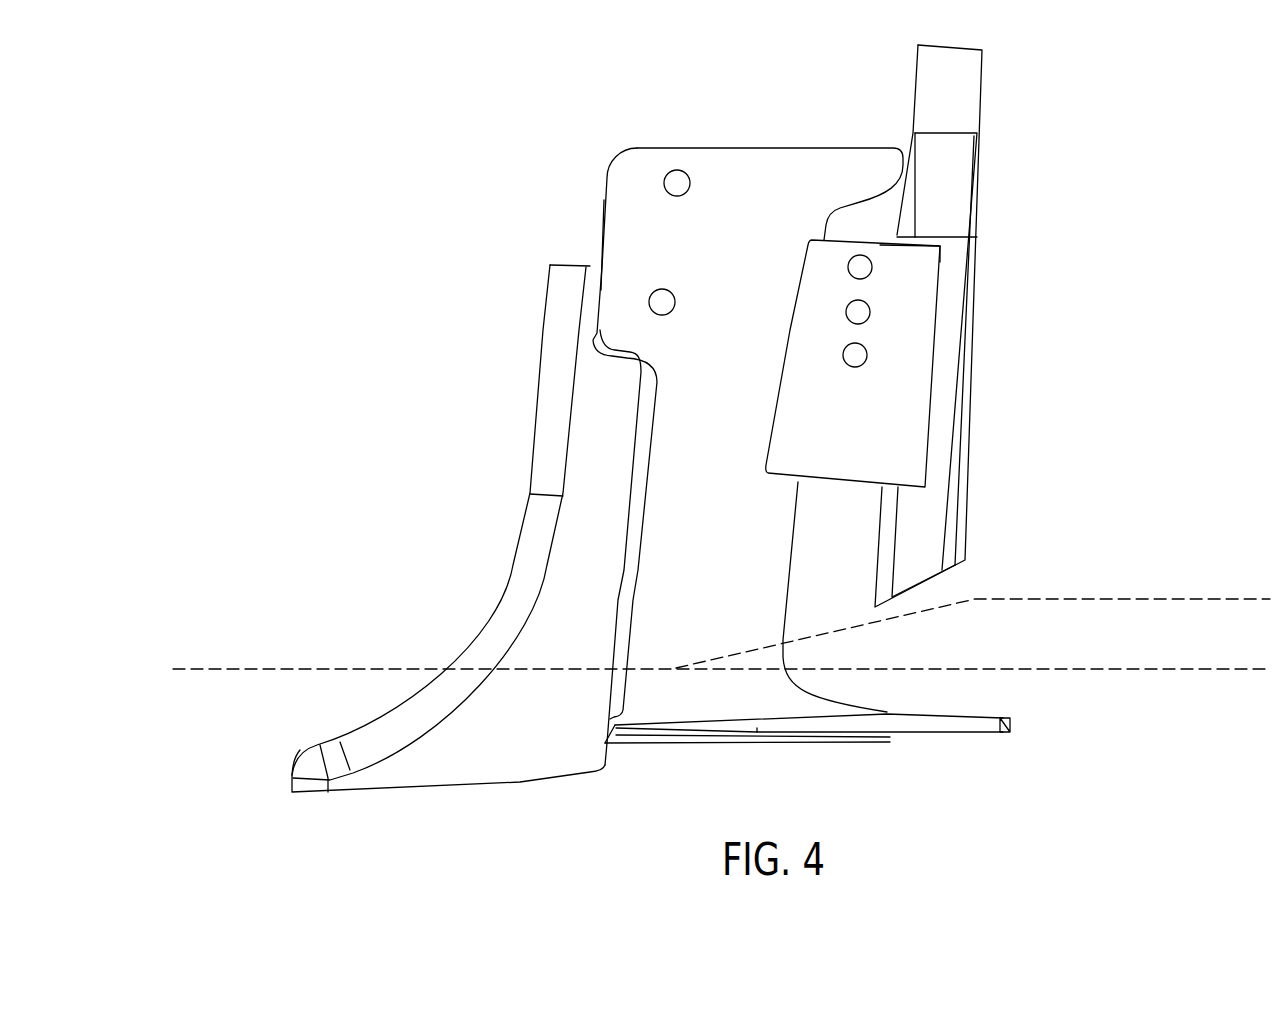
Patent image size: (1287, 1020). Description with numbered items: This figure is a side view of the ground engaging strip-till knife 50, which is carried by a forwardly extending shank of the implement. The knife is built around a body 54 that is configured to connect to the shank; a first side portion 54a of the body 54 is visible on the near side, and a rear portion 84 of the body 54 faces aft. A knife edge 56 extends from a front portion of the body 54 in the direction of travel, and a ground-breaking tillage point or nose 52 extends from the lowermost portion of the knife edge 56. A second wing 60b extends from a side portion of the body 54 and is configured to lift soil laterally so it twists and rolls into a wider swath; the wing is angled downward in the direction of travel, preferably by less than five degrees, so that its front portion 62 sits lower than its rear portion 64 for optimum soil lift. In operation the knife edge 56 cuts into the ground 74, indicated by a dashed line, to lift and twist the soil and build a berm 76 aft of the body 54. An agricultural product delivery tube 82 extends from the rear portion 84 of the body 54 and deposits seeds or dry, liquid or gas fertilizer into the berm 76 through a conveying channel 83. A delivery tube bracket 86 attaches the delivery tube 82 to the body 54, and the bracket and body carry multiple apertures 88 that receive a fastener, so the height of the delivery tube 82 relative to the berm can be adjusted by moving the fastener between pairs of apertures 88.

The strip-till knife 50 is at (500, 92).
The nose 52 is at (296, 777).
The body 54 is at (789, 148).
The first side portion 54a is at (620, 222).
The knife edge 56 is at (503, 617).
The second wing 60b is at (937, 725).
The front portion of the wing 62 is at (687, 743).
The rear portion of the wing 64 is at (1010, 733).
The ground 74 is at (259, 722).
The berm 76 is at (1153, 629).
The agricultural product delivery tube 82 is at (1097, 265).
The conveying channel 83 is at (942, 193).
The rear portion of the body 84 is at (800, 483).
The delivery tube bracket 86 is at (832, 465).
The apertures 88 is at (847, 364).